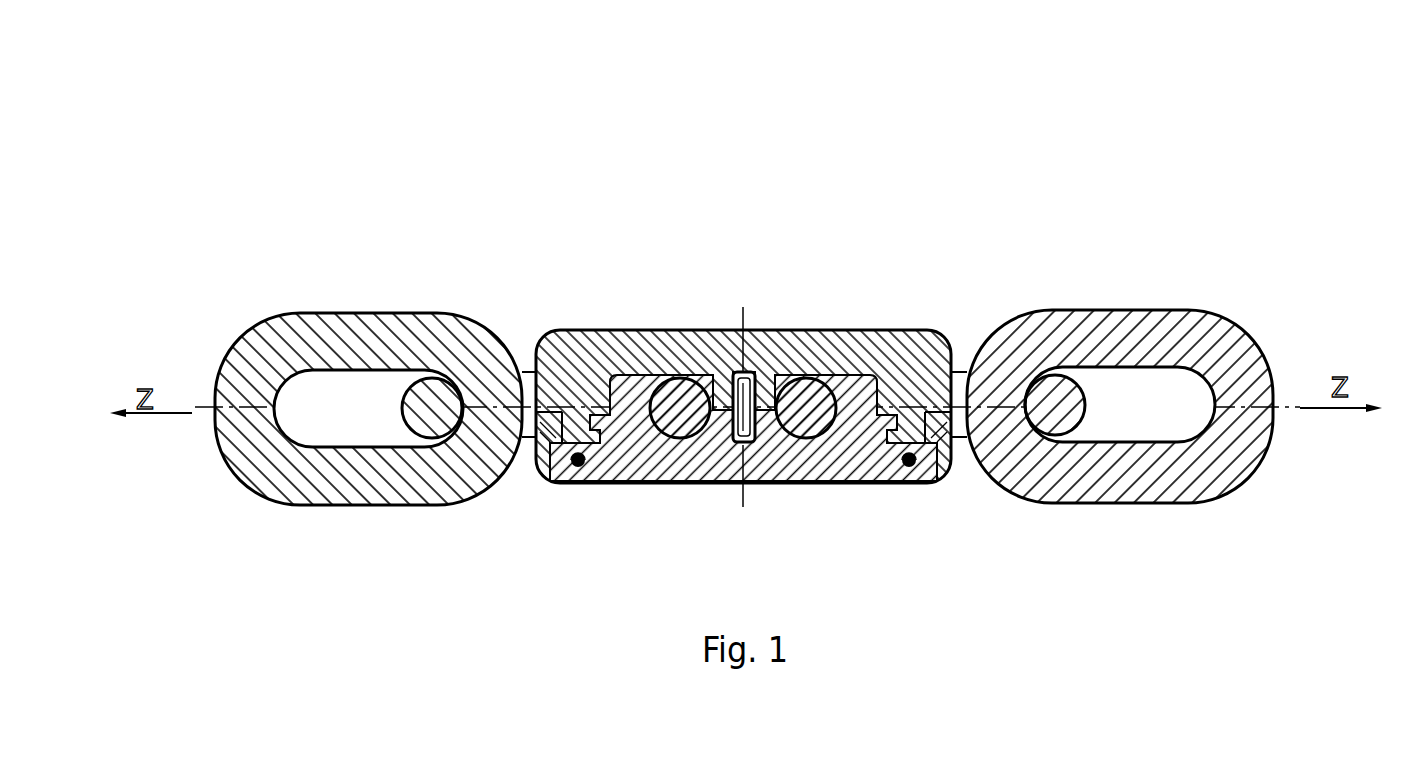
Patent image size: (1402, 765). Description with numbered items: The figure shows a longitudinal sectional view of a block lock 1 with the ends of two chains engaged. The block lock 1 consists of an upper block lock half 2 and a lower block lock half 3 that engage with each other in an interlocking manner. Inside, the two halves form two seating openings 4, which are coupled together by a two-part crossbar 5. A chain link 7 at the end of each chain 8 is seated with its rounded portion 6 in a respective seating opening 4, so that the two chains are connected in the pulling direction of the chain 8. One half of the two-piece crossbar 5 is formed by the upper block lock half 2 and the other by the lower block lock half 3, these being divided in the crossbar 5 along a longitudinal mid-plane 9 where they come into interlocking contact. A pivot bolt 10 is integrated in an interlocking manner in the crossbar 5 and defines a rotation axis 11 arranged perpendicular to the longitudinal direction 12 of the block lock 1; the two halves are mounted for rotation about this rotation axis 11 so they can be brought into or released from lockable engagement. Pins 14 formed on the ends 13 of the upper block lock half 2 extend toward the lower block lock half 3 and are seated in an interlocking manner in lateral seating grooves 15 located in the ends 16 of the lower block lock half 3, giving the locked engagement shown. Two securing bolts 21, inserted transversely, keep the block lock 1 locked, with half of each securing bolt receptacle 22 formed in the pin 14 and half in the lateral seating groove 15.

The block lock 1 is at (737, 260).
The upper block lock half 2 is at (661, 352).
The lower block lock half 3 is at (647, 470).
The seating opening 4 is at (712, 400).
The crossbar 5 is at (773, 445).
The rounded portion 6 is at (675, 440).
The chain link 7 is at (527, 372).
The chain 8 is at (244, 258).
The longitudinal mid-plane 9 is at (716, 445).
The pivot bolt 10 is at (750, 372).
The rotation axis 11 is at (743, 497).
The longitudinal direction 12 is at (866, 445).
The end of upper block lock half 13 is at (565, 395).
The pin 14 is at (575, 427).
The lateral seating groove 15 is at (537, 450).
The end of lower block lock half 16 is at (563, 482).
The securing bolt 21 is at (579, 467).
The securing bolt receptacle 22 is at (583, 466).